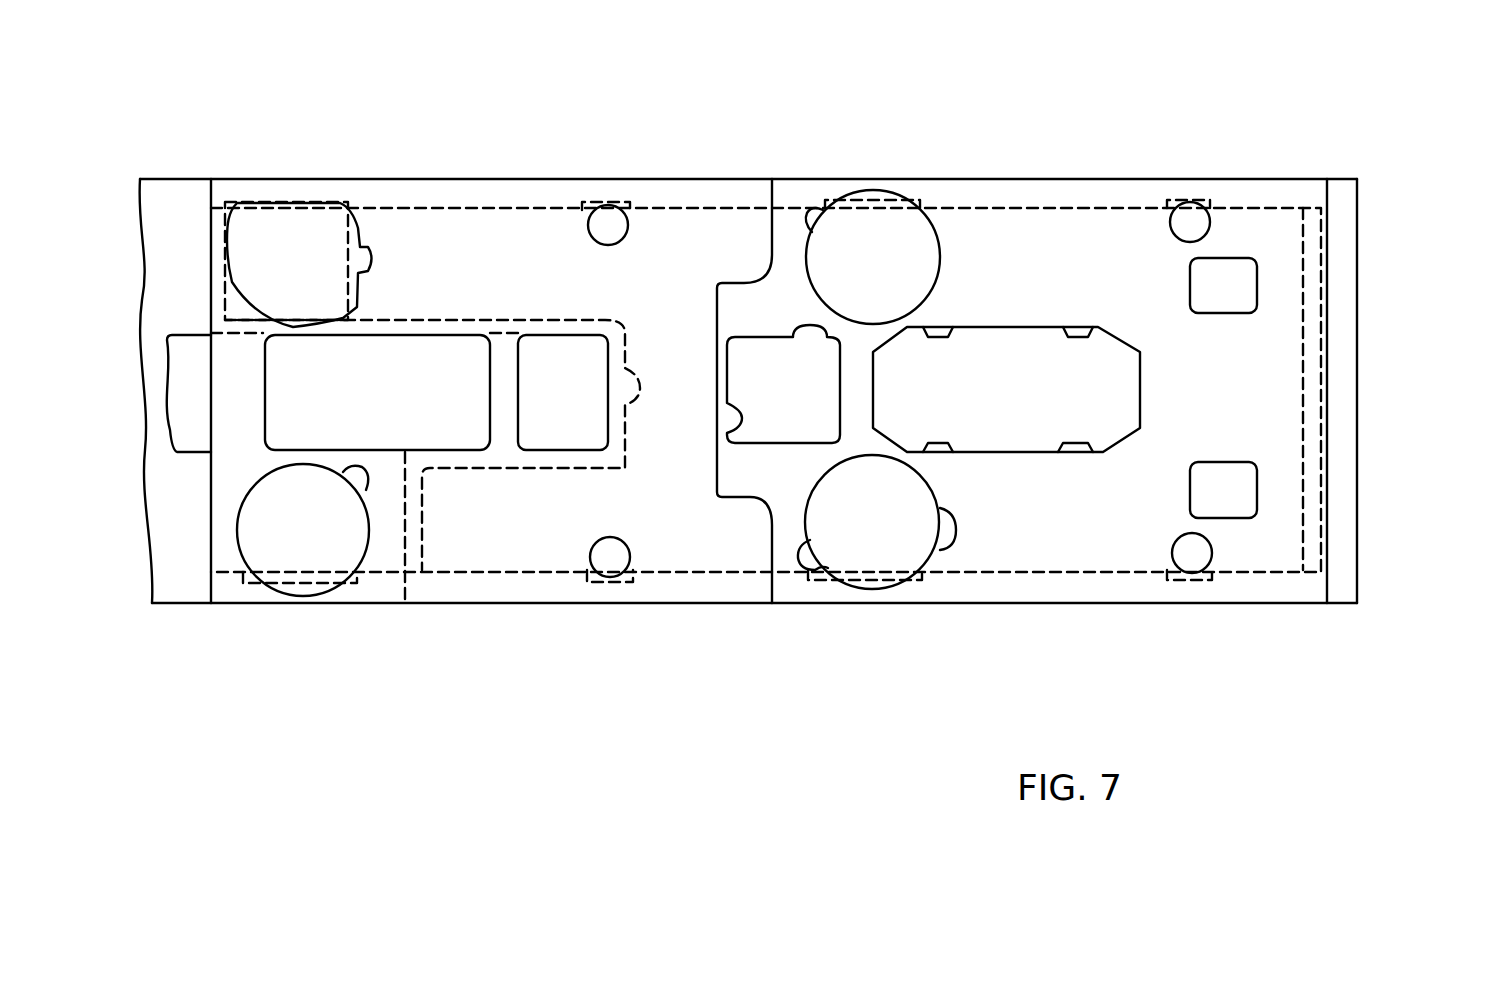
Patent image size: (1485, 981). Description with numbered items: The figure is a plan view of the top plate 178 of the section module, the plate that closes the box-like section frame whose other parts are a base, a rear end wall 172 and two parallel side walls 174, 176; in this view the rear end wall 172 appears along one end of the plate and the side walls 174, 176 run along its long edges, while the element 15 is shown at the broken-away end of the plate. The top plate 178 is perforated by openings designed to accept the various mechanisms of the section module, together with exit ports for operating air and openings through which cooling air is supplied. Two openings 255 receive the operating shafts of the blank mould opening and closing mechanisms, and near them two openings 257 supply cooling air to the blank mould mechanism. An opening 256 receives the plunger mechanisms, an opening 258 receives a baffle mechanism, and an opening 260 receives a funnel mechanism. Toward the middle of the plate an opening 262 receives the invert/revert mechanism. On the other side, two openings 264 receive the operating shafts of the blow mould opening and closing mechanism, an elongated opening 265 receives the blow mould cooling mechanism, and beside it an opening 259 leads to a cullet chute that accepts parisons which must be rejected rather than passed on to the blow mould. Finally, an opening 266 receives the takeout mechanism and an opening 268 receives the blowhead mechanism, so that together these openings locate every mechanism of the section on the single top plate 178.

The housing wall 15 is at (192, 425).
The rear end wall 172 is at (1313, 362).
The side wall 174 is at (985, 585).
The side wall 176 is at (1042, 190).
The top plate 178 is at (483, 180).
The opening 255 is at (1190, 213).
The opening 256 is at (1020, 333).
The opening 257 is at (1228, 473).
The opening 258 is at (932, 224).
The opening 259 is at (573, 345).
The opening 260 is at (808, 520).
The opening 262 is at (727, 430).
The opening 264 is at (609, 207).
The opening 265 is at (415, 340).
The opening 266 is at (248, 548).
The opening 268 is at (332, 208).